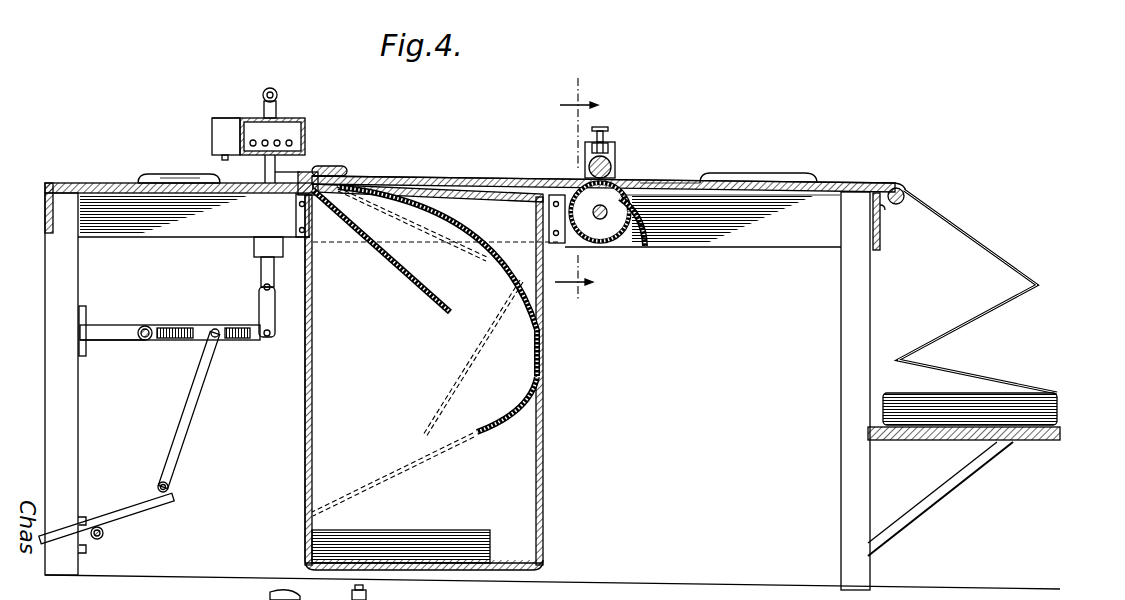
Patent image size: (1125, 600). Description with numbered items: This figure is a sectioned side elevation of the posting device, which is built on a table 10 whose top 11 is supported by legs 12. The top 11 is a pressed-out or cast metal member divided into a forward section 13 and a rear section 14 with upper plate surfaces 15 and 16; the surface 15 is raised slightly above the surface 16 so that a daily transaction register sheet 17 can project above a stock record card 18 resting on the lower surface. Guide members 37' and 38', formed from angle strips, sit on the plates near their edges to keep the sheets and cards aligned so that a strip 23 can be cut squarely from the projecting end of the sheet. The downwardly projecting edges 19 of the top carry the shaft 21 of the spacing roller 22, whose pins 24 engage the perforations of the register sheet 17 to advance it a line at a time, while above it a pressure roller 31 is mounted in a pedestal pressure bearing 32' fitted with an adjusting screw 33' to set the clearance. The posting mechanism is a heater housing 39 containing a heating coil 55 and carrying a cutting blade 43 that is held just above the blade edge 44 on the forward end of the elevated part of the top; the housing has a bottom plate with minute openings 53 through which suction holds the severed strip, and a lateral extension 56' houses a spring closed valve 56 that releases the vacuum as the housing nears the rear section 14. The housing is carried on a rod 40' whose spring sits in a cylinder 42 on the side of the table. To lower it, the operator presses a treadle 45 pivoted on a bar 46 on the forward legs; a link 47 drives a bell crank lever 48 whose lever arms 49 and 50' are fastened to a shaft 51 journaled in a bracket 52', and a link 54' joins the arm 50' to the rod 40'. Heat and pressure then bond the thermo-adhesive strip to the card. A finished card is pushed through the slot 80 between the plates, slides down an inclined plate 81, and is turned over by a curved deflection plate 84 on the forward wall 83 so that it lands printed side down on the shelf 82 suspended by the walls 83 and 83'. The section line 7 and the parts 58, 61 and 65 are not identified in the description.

The section line 7 is at (576, 199).
The table 10 is at (752, 250).
The top 11 is at (497, 176).
The legs 12 is at (78, 393).
The forward section 13 is at (684, 177).
The rear section 14 is at (168, 180).
The upper plate surface 15 is at (762, 176).
The upper plate surface 16 is at (90, 182).
The daily transaction register sheet 17 is at (437, 176).
The stock record card 18 is at (190, 176).
The downwardly projecting edges 19 is at (797, 235).
The shaft 21 is at (598, 220).
The spacing roller 22 is at (606, 243).
The strip 23 is at (265, 172).
The pins 24 is at (636, 240).
The pressure roller 31 is at (614, 165).
The pedestal pressure bearing 32' is at (577, 150).
The adjusting screw 33' is at (625, 120).
The guide member 37' is at (861, 196).
The guide member 38' is at (166, 163).
The heater housing 39 is at (237, 118).
The rod 40' is at (242, 273).
The cylinder 42 is at (254, 245).
The cutting blade 43 is at (303, 148).
The blade edge 44 is at (293, 185).
The treadle 45 is at (143, 508).
The bar 46 is at (103, 538).
The link 47 is at (183, 458).
The bell crank lever 48 is at (163, 326).
The lever arm 49 is at (182, 339).
The lever arm 50' is at (246, 352).
The shaft 51 is at (145, 326).
The bracket 52' is at (112, 357).
The minute openings 53 is at (305, 168).
The link 54' is at (247, 312).
The heating coil 55 is at (270, 140).
The spring closed valve 56 is at (299, 591).
The lateral extension 56' is at (201, 110).
The knob 58 is at (276, 92).
The tray 61 is at (915, 440).
The roll 65 is at (347, 170).
The slot 80 is at (340, 194).
The inclined plate 81 is at (394, 264).
The shelf 82 is at (520, 562).
The forward wall 83 is at (442, 377).
The rear wall 83' is at (283, 377).
The curved deflection plate 84 is at (537, 402).